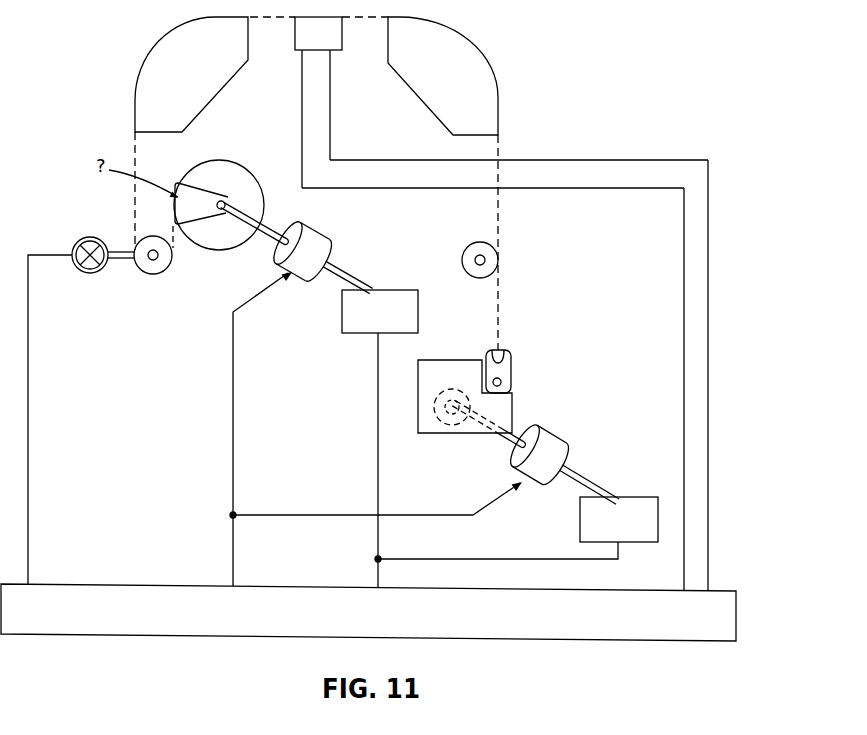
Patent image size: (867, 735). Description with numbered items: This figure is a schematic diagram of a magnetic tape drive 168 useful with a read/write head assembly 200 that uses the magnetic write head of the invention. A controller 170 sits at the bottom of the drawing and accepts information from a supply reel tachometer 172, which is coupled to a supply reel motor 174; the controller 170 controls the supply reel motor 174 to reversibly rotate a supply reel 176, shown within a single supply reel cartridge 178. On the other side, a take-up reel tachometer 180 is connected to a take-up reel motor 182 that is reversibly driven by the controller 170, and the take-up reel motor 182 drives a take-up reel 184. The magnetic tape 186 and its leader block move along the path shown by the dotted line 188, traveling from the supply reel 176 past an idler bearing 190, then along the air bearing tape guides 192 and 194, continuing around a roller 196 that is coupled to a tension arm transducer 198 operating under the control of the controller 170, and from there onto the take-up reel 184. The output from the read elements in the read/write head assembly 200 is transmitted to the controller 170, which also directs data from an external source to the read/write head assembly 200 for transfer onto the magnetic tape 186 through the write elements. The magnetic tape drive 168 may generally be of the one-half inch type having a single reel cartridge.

The magnetic tape drive 168 is at (572, 100).
The controller 170 is at (550, 624).
The supply reel tachometer 172 is at (580, 524).
The supply reel motor 174 is at (557, 436).
The supply reel 176 is at (458, 393).
The single supply reel cartridge 178 is at (437, 433).
The take-up reel tachometer 180 is at (342, 318).
The take-up reel motor 182 is at (328, 238).
The take-up reel 184 is at (245, 163).
The magnetic tape 186 is at (508, 407).
The dotted line 188 is at (503, 218).
The idler bearing 190 is at (465, 252).
The air bearing tape guide 192 is at (473, 53).
The air bearing tape guide 194 is at (158, 62).
The roller 196 is at (153, 275).
The tension arm transducer 198 is at (84, 237).
The read/write head assembly 200 is at (336, 36).